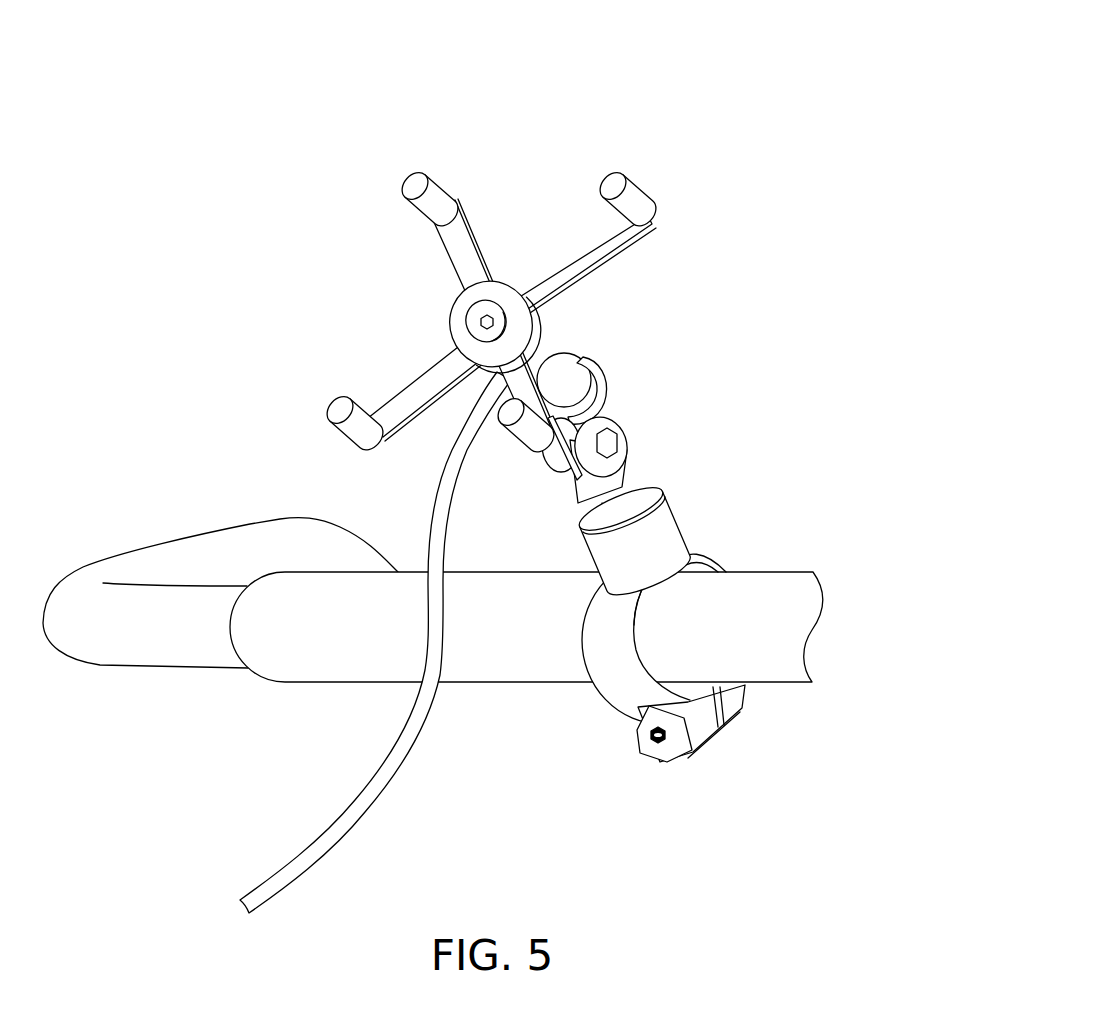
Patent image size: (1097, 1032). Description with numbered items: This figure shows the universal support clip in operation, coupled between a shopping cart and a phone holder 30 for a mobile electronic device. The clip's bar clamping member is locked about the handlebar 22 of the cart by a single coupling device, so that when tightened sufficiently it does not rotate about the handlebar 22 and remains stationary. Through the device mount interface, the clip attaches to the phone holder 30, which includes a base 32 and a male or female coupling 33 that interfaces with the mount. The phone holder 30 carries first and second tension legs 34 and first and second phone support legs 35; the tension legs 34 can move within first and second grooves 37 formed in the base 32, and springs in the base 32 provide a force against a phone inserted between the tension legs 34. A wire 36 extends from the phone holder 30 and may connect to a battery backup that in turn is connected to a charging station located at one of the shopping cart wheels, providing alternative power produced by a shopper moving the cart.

The handlebar 22 is at (303, 643).
The phone holder 30 is at (638, 80).
The base 32 is at (458, 327).
The coupling 33 is at (532, 317).
The tension legs 34 is at (415, 186).
The phone support legs 35 is at (340, 410).
The wire 36 is at (385, 777).
The grooves 37 is at (565, 360).